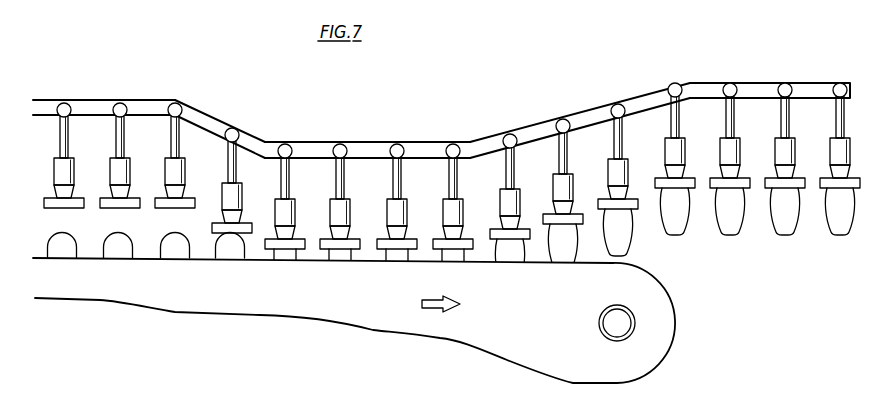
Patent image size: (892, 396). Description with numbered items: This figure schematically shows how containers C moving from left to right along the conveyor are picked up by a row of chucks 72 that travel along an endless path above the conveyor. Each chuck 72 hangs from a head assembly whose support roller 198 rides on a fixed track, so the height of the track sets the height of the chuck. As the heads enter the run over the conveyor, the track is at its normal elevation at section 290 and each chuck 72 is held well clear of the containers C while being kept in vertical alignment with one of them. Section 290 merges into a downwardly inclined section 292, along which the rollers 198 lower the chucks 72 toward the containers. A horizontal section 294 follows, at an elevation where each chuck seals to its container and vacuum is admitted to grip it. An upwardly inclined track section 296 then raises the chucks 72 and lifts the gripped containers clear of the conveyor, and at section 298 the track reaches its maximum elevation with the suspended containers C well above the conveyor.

The chuck 72 is at (165, 174).
The support roller 198 is at (118, 103).
The track section 290 is at (142, 103).
The downwardly inclined section 292 is at (212, 127).
The horizontal section 294 is at (315, 145).
The upwardly inclined track section 296 is at (541, 127).
The track section 298 is at (813, 86).
The container C is at (67, 259).